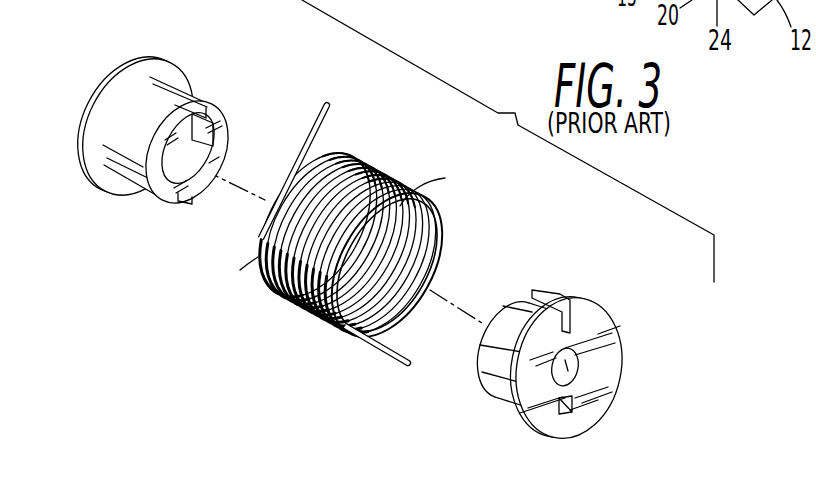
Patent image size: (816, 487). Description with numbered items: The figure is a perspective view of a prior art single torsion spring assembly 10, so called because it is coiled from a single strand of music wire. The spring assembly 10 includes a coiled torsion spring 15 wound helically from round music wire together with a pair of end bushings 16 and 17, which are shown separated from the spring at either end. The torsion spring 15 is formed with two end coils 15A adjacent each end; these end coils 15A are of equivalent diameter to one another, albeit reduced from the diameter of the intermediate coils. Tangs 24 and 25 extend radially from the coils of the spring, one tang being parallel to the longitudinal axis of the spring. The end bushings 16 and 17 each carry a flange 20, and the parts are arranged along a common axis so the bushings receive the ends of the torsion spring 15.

The single torsion spring assembly 10 is at (425, 150).
The coiled torsion spring 15 is at (301, 326).
The end coils 15A is at (430, 182).
The end bushing 16 is at (200, 79).
The end bushing 17 is at (491, 401).
The flange 20 is at (89, 132).
The tang 24 is at (392, 356).
The tang 25 is at (316, 114).